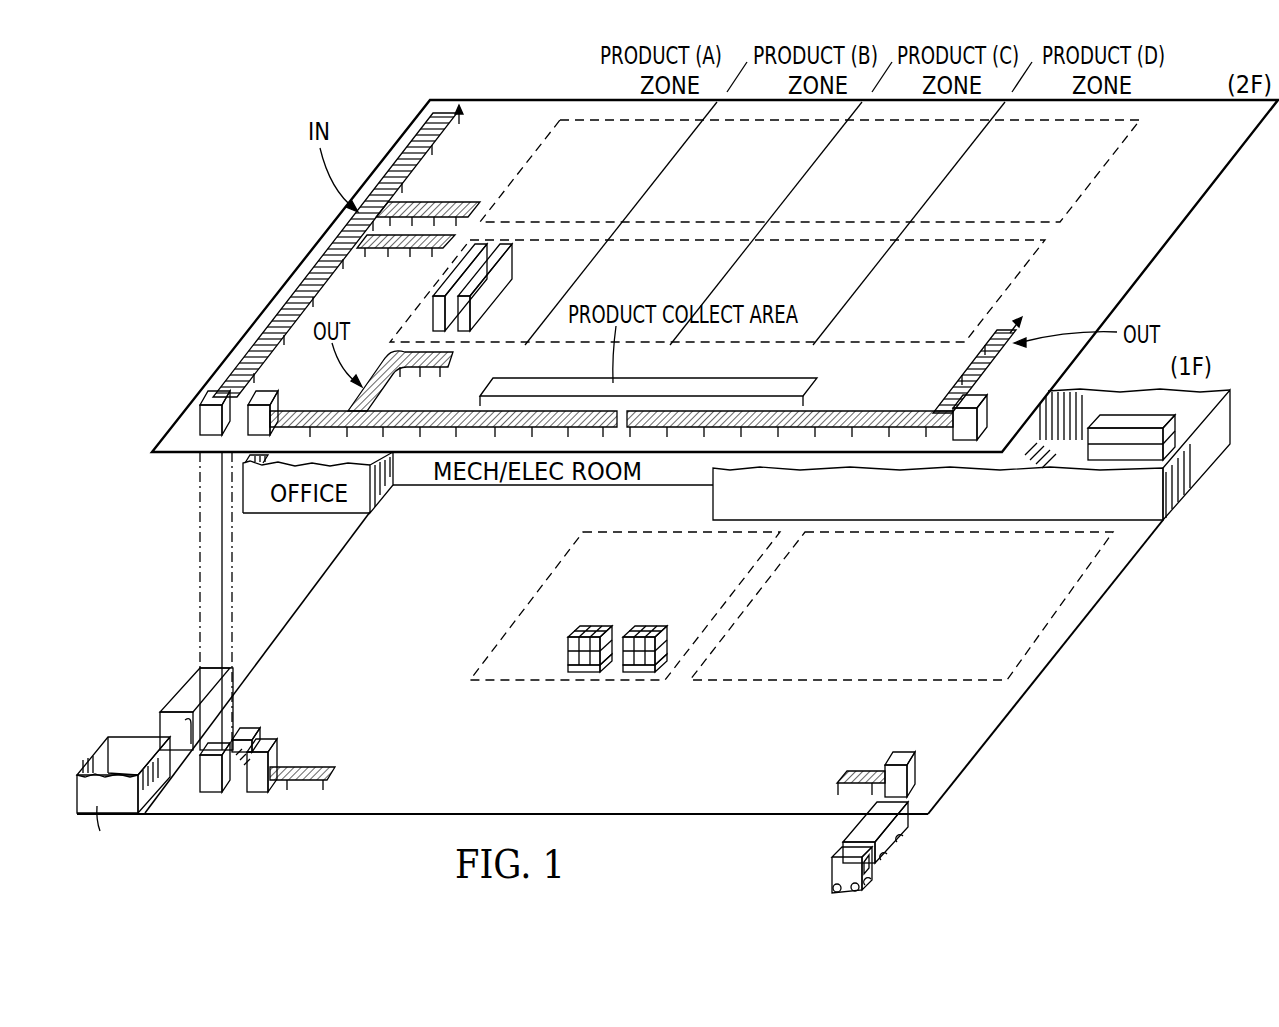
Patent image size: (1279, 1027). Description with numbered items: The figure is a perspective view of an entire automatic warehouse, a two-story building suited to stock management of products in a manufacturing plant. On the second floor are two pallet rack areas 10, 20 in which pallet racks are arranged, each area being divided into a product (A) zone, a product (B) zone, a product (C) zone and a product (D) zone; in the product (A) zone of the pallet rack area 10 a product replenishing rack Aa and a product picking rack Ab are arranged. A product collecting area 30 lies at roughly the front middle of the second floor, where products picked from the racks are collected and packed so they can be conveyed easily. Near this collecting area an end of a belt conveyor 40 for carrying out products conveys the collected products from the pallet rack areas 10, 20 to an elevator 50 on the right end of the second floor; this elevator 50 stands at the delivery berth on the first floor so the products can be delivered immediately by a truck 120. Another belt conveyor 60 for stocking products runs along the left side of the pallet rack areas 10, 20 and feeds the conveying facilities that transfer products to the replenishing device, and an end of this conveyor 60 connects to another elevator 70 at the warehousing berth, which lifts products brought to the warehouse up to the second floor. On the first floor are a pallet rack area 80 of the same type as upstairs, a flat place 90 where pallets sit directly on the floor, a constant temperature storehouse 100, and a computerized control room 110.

The pallet rack area 10 is at (1010, 283).
The pallet rack area 20 is at (1100, 168).
The product collecting area 30 is at (816, 383).
The belt conveyor 40 is at (908, 408).
The elevator 50 is at (268, 394).
The belt conveyor 60 is at (432, 150).
The elevator 70 is at (198, 394).
The pallet rack area 80 is at (748, 674).
The flat place 90 is at (511, 674).
The constant temperature storehouse 100 is at (1204, 457).
The computerized control room 110 is at (123, 744).
The truck 120 is at (888, 843).
The product replenishing rack Aa is at (436, 315).
The product picking rack Ab is at (470, 310).